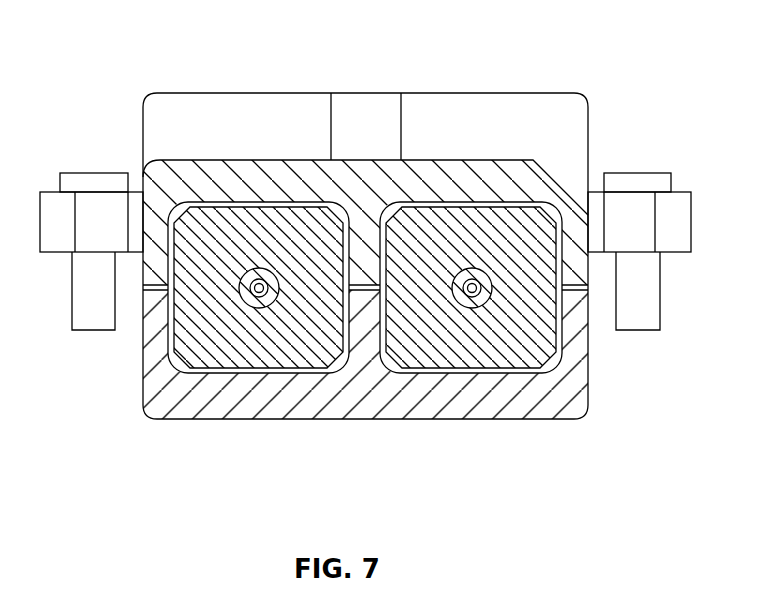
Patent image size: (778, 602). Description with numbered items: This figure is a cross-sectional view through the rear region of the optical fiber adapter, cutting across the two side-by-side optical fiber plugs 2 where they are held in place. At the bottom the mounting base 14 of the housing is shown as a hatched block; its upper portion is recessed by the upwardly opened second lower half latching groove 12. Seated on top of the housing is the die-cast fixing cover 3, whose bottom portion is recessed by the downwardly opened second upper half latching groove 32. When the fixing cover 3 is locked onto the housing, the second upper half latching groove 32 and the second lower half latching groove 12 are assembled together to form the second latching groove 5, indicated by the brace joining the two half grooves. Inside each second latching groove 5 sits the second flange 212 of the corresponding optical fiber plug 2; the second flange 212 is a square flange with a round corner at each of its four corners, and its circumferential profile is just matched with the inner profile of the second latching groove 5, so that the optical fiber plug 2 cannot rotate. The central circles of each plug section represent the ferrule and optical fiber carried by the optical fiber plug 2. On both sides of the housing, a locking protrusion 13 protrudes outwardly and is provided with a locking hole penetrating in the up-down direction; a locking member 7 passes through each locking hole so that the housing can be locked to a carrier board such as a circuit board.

The fixing cover 3 is at (227, 108).
The locking member 7 is at (636, 181).
The locking protrusion 13 is at (670, 240).
The second latching groove 5 is at (64, 385).
The second upper half latching groove 32 is at (313, 355).
The second lower half latching groove 12 is at (326, 334).
The second flange 212 is at (228, 355).
The mounting base 14 is at (308, 405).
The optical fiber plug 2 is at (466, 293).